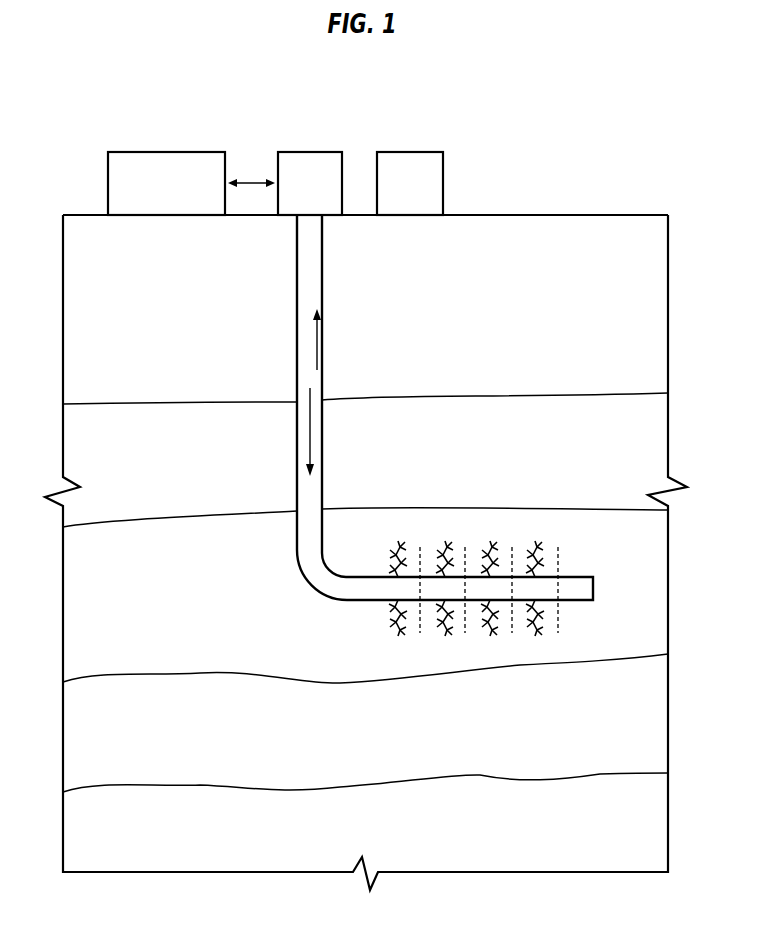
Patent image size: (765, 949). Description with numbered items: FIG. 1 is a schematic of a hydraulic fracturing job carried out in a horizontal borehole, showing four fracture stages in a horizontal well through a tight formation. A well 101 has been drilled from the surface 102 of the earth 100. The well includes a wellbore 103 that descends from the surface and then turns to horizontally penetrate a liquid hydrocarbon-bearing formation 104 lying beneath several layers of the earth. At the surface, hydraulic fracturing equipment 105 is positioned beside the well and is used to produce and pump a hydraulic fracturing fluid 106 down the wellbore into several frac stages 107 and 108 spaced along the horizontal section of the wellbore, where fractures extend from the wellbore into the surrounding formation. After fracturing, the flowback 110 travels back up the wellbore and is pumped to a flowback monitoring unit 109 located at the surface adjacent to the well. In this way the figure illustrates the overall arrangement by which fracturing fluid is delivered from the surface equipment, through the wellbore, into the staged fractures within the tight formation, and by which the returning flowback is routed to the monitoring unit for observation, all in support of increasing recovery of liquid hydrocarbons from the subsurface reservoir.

The earth 100 is at (583, 272).
The well 101 is at (324, 152).
The surface 102 is at (521, 214).
The wellbore 103 is at (297, 312).
The liquid hydrocarbon-bearing formation 104 is at (145, 620).
The hydraulic fracturing equipment 105 is at (147, 152).
The hydraulic fracturing fluid 106 is at (310, 420).
The frac stages 107 is at (392, 562).
The frac stages 108 is at (558, 618).
The flowback monitoring unit 109 is at (410, 152).
The flowback 110 is at (323, 343).